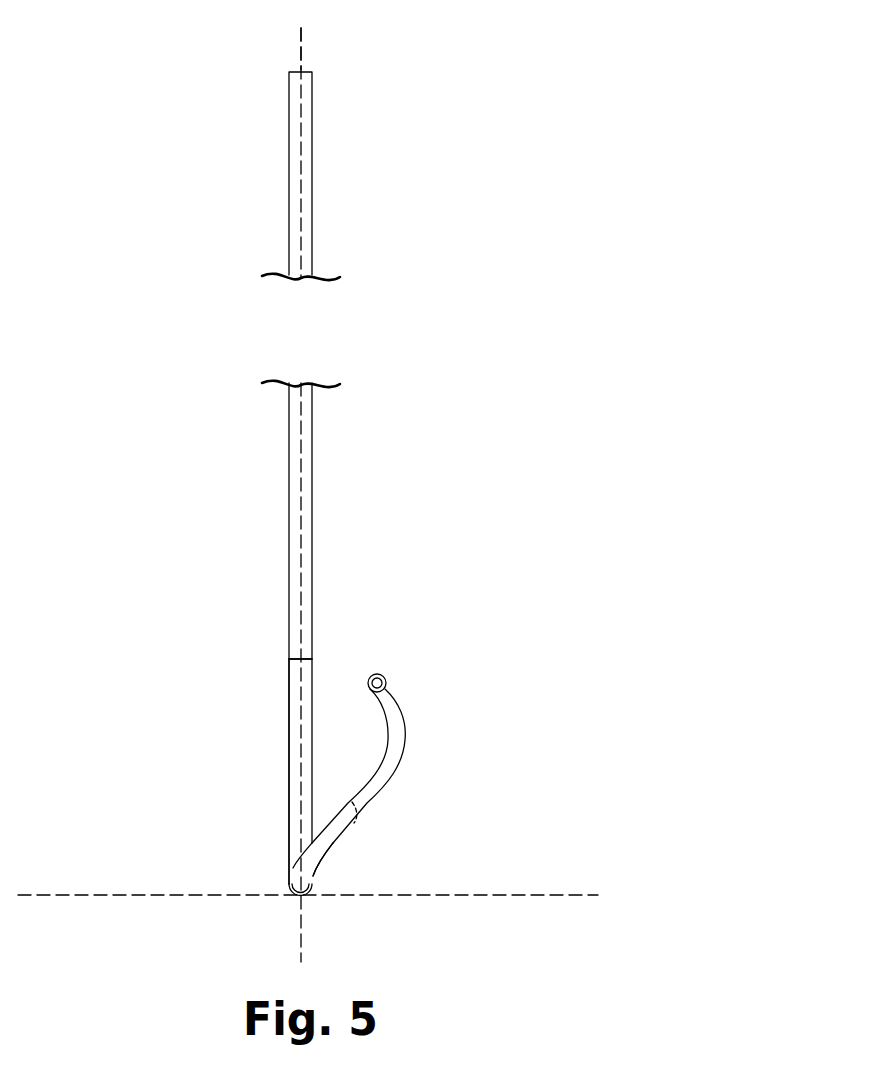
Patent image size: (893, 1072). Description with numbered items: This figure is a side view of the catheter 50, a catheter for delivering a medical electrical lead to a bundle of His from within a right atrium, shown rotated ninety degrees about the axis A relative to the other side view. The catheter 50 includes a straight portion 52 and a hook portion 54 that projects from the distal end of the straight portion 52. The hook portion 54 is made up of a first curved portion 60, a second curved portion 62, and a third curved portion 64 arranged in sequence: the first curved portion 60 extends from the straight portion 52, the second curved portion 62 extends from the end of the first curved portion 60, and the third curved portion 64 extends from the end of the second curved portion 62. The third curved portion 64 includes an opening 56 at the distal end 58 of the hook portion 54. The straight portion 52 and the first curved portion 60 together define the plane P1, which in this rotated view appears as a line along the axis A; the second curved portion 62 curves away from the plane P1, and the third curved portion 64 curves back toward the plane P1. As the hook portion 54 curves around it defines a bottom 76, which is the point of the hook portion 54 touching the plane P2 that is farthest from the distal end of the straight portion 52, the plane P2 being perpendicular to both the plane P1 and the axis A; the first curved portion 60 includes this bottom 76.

The axis A is at (298, 73).
The plane P1 is at (303, 43).
The plane P2 is at (562, 893).
The catheter 50 is at (284, 164).
The straight portion 52 is at (284, 519).
The hook portion 54 is at (320, 683).
The opening 56 is at (382, 675).
The distal end 58 is at (387, 682).
The first curved portion 60 is at (284, 770).
The second curved portion 62 is at (345, 864).
The third curved portion 64 is at (412, 773).
The bottom 76 is at (297, 897).